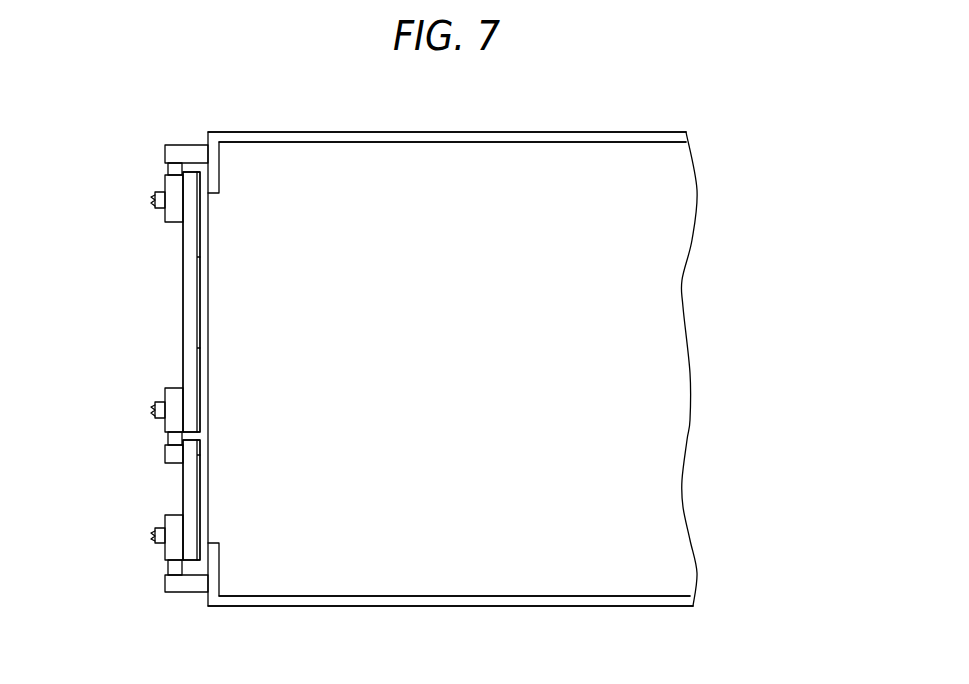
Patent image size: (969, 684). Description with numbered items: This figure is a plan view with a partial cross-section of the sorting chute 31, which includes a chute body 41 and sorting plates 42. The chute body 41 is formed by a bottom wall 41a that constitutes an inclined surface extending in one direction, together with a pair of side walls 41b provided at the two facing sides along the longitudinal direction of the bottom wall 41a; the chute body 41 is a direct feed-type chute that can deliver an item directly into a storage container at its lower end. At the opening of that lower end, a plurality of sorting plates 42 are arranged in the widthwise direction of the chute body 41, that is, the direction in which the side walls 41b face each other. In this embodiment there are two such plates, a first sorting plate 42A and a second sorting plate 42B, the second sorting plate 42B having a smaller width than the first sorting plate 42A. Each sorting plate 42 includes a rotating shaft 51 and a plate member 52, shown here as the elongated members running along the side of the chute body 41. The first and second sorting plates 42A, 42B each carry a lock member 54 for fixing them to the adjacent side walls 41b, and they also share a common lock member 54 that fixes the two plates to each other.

The sorting chute 31 is at (799, 147).
The chute body 41 is at (531, 372).
The bottom wall 41a is at (670, 413).
The side walls 41b is at (481, 131).
The sorting plate 42 is at (127, 368).
The first sorting plate 42A is at (170, 302).
The second sorting plate 42B is at (170, 487).
The rotating shaft 51 is at (205, 317).
The plate member 52 is at (193, 263).
The lock member 54 is at (155, 200).